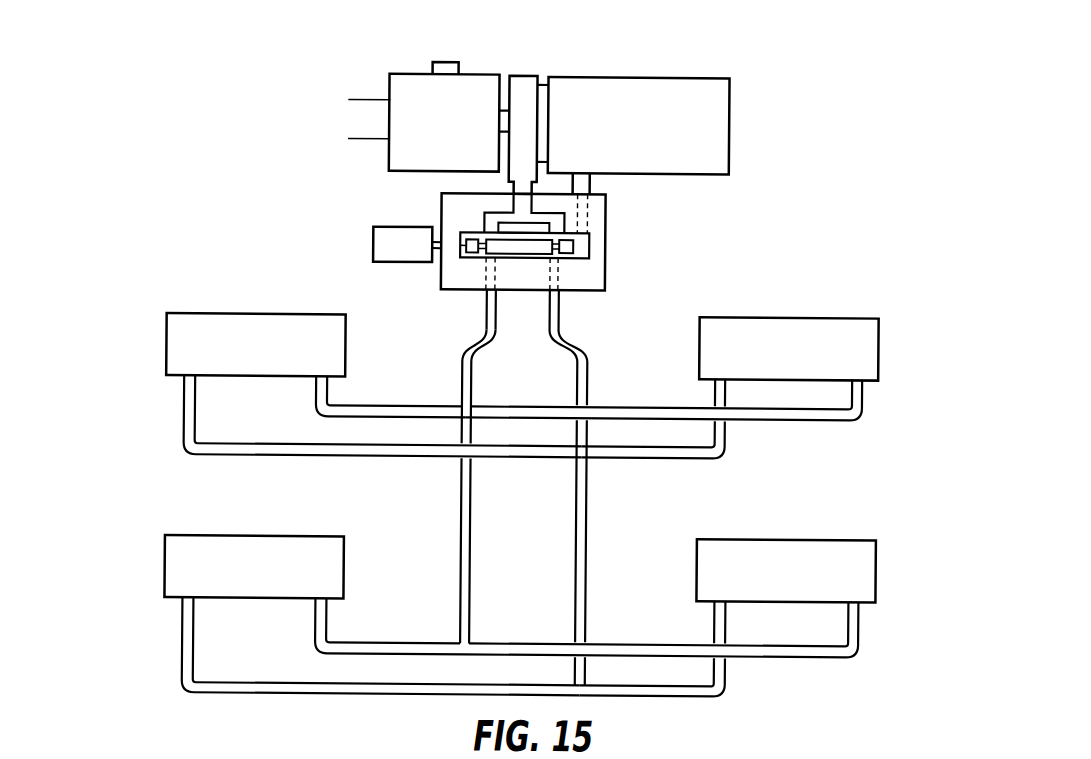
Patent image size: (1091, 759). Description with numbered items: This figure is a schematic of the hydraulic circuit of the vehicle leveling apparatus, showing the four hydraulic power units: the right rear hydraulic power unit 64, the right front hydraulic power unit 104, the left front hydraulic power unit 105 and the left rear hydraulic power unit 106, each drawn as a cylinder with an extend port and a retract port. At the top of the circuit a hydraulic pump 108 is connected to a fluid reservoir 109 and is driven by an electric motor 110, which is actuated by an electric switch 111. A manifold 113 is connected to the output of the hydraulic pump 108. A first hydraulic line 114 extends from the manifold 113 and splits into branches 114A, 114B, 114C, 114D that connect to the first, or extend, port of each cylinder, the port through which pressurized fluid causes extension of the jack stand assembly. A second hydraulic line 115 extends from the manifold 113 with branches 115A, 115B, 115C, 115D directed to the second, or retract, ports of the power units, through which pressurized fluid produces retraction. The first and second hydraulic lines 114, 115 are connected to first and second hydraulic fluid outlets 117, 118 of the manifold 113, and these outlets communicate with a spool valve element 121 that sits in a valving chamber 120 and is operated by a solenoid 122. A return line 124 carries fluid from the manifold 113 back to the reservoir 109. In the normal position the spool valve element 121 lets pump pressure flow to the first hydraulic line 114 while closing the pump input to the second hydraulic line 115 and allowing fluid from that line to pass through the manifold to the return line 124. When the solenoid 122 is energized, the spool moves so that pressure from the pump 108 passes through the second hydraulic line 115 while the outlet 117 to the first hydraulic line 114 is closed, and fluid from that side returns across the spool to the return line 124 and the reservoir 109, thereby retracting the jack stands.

The right rear hydraulic power unit 64 is at (894, 545).
The right front hydraulic power unit 104 is at (886, 342).
The left front hydraulic power unit 105 is at (159, 325).
The left rear hydraulic power unit 106 is at (153, 569).
The hydraulic pump 108 is at (514, 73).
The fluid reservoir 109 is at (678, 87).
The electric motor 110 is at (400, 166).
The electric switch 111 is at (430, 66).
The manifold 113 is at (603, 207).
The first hydraulic line 114 is at (468, 381).
The first hydraulic line branch 114A is at (650, 644).
The first hydraulic line branch 114B is at (808, 416).
The first hydraulic line branch 114C is at (430, 406).
The first hydraulic line branch 114D is at (430, 644).
The second hydraulic line 115 is at (580, 352).
The second hydraulic line branch 115A is at (724, 682).
The second hydraulic line branch 115B is at (680, 457).
The second hydraulic line branch 115C is at (280, 462).
The second hydraulic line branch 115D is at (302, 696).
The first hydraulic fluid outlet 117 is at (485, 297).
The second hydraulic fluid outlet 118 is at (559, 298).
The valving chamber 120 is at (588, 255).
The spool valve element 121 is at (572, 247).
The solenoid 122 is at (372, 243).
The return line 124 is at (590, 182).